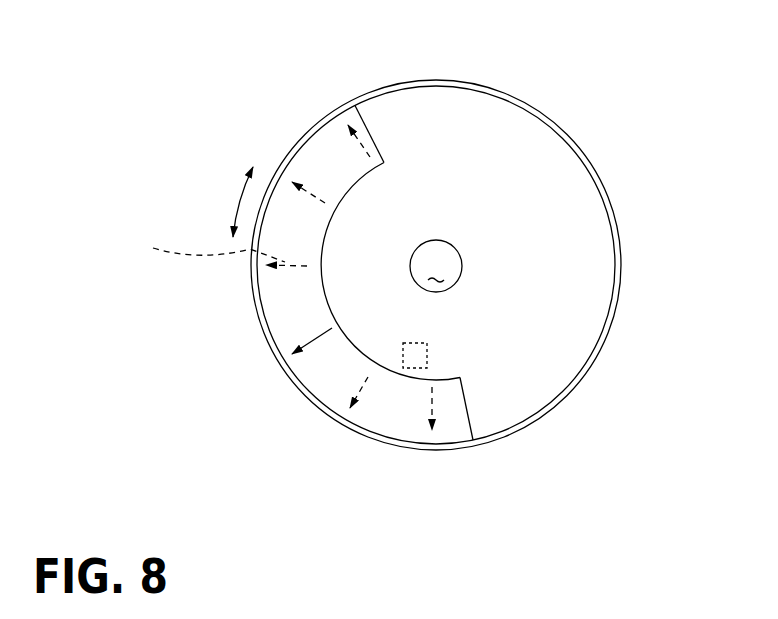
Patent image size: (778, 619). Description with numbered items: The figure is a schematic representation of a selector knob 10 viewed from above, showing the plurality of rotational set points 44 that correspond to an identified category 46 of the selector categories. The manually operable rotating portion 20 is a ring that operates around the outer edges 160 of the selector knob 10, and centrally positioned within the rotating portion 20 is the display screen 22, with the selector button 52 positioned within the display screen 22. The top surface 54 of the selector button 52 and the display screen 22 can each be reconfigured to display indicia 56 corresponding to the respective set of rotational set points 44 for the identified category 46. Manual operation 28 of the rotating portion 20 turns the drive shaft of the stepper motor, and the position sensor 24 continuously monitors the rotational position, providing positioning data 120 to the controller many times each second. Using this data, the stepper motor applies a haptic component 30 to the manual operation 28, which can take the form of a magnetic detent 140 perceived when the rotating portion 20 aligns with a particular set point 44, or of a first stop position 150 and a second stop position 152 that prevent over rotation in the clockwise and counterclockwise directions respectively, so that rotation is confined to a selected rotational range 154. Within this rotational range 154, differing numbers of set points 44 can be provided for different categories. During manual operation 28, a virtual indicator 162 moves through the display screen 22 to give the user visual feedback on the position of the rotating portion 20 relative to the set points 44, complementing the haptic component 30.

The selector knob 10 is at (668, 188).
The rotating portion 20 is at (623, 252).
The display screen 22 is at (572, 315).
The position sensor 24 is at (430, 357).
The manual operation 28 is at (240, 203).
The haptic component 30 is at (273, 363).
The rotational set points 44 is at (214, 250).
The identified category 46 is at (270, 133).
The selector button 52 is at (462, 264).
The top surface 54 is at (436, 266).
The indicia 56 is at (320, 180).
The positioning data 120 is at (435, 347).
The magnetic detent 140 is at (240, 335).
The first stop position 150 is at (377, 137).
The second stop position 152 is at (468, 410).
The rotational range 154 is at (267, 290).
The outer edges 160 is at (557, 125).
The virtual indicator 162 is at (313, 343).